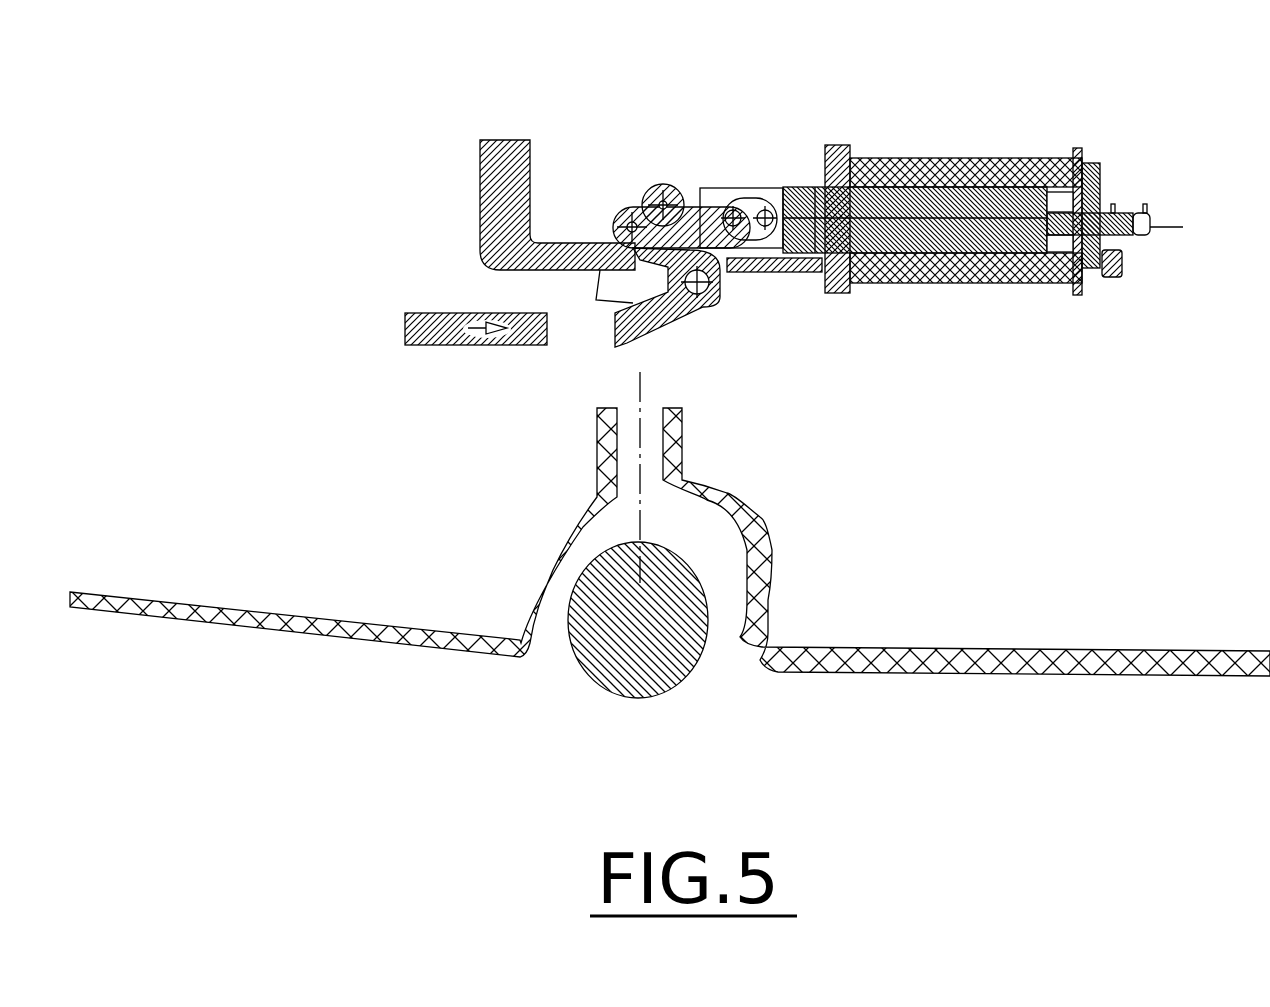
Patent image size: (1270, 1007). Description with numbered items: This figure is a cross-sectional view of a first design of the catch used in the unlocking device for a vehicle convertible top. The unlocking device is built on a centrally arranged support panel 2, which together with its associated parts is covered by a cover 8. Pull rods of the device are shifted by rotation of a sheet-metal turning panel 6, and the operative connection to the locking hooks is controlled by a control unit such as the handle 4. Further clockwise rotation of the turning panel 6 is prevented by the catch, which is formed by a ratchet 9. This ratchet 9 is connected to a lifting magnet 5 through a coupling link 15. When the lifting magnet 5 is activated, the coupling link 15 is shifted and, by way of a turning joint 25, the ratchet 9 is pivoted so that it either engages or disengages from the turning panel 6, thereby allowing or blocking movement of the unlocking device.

The support panel 2 is at (493, 193).
The handle 4 is at (593, 672).
The lifting magnet 5 is at (975, 275).
The turning panel 6 is at (413, 312).
The cover 8 is at (922, 670).
The ratchet 9 is at (672, 318).
The coupling link 15 is at (720, 188).
The turning joint 25 is at (664, 207).